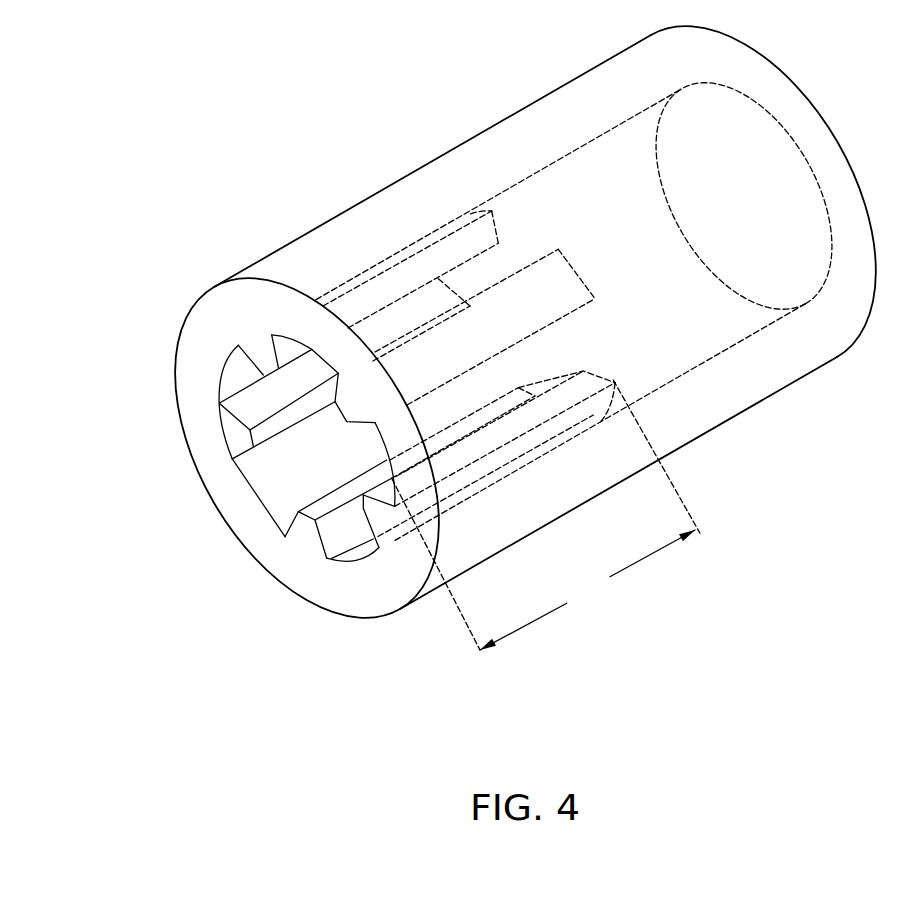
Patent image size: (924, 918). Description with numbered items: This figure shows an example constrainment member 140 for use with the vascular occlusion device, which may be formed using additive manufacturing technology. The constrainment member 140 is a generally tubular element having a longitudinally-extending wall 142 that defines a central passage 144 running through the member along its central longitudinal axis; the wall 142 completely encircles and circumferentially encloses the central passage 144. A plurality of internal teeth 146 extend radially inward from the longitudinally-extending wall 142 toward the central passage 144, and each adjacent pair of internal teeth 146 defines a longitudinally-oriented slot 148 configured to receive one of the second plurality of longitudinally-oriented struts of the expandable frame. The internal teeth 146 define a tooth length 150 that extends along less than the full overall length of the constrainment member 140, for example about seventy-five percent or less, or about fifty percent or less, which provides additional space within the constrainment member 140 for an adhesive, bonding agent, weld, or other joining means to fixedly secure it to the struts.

The constrainment member 140 is at (400, 134).
The longitudinally-extending wall 142 is at (202, 325).
The central passage 144 is at (288, 472).
The internal teeth 146 is at (238, 436).
The longitudinally-oriented slot 148 is at (358, 563).
The tooth length 150 is at (546, 515).